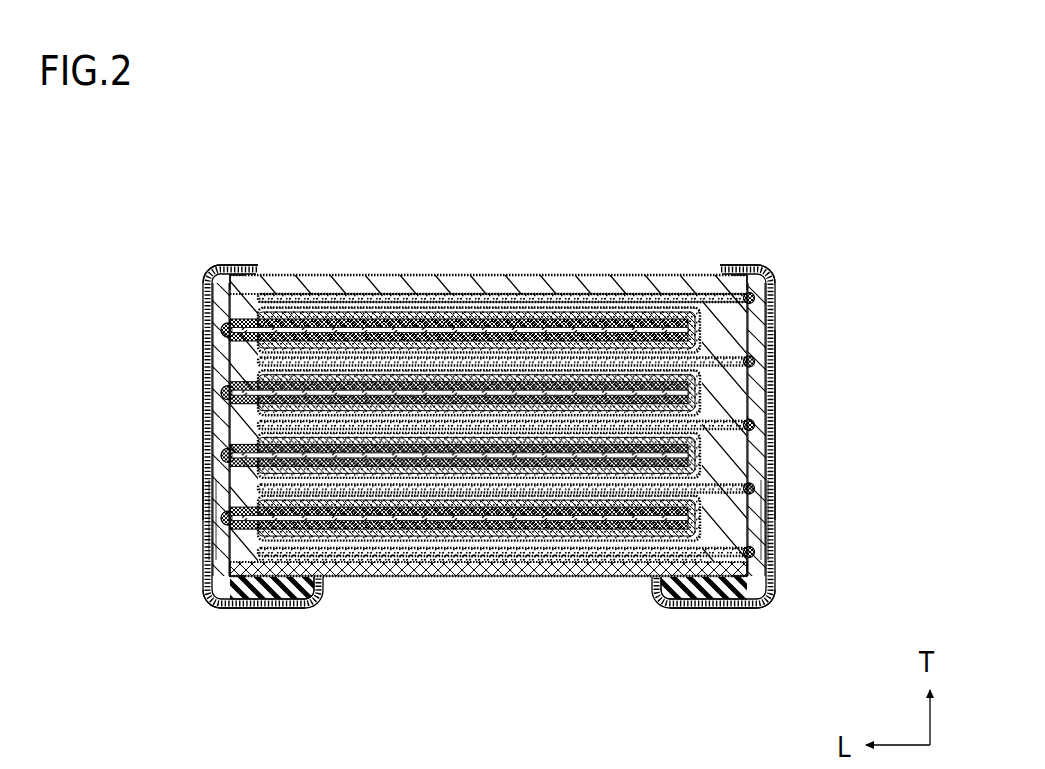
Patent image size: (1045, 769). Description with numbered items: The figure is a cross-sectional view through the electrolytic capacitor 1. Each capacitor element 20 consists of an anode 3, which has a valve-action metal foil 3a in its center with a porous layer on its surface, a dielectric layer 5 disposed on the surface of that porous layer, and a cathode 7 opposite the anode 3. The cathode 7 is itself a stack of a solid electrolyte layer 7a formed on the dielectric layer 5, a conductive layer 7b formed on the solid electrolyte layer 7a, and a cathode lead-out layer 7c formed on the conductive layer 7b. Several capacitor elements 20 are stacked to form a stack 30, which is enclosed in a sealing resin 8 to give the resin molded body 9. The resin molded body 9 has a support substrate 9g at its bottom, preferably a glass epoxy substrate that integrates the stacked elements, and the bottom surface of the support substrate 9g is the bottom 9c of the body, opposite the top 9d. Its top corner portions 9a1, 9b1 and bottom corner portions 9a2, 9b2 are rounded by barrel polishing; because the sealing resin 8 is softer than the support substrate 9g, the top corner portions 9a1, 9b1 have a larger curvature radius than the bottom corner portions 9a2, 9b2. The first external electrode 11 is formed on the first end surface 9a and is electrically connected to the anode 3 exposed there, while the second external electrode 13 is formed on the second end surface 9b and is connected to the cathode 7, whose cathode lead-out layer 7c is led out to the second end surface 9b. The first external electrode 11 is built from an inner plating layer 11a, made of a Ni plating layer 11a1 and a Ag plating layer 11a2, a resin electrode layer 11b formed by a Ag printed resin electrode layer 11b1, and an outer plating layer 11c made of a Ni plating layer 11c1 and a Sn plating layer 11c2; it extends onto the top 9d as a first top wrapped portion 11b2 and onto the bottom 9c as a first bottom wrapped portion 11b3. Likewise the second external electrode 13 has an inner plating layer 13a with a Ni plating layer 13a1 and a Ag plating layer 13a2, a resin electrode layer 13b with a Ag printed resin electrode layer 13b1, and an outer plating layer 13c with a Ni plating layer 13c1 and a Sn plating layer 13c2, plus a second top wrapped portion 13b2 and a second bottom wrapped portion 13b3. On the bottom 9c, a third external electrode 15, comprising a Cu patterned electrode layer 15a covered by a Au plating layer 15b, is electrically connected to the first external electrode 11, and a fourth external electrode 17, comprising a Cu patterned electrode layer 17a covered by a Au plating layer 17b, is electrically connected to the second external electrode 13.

The electrolytic capacitor 1 is at (817, 168).
The anode 3 is at (332, 201).
The valve-action metal foil 3a is at (325, 331).
The dielectric layer 5 is at (377, 324).
The cathode 7 is at (508, 201).
The solid electrolyte layer 7a is at (425, 313).
The conductive layer 7b is at (463, 295).
The cathode lead-out layer 7c is at (503, 298).
The sealing resin 8 is at (548, 290).
The resin molded body 9 is at (673, 272).
The first end surface 9a is at (228, 300).
The top corner portion 9a1 is at (237, 279).
The bottom corner portion 9a2 is at (244, 608).
The second end surface 9b is at (766, 318).
The top corner portion 9b1 is at (735, 272).
The bottom corner portion 9b2 is at (738, 608).
The bottom 9c is at (455, 579).
The top 9d is at (592, 275).
The support substrate 9g is at (530, 577).
The first external electrode 11 is at (190, 264).
The inner plating layer 11a is at (100, 305).
The Ni plating layer 11a1 is at (218, 330).
The Ag plating layer 11a2 is at (213, 375).
The resin electrode layer 11b is at (100, 403).
The Ag printed resin electrode layer 11b1 is at (207, 425).
The first top wrapped portion 11b2 is at (220, 268).
The first bottom wrapped portion 11b3 is at (228, 607).
The outer plating layer 11c is at (100, 480).
The Ni plating layer 11c1 is at (216, 500).
The Sn plating layer 11c2 is at (211, 548).
The second external electrode 13 is at (785, 267).
The inner plating layer 13a is at (876, 330).
The Ni plating layer 13a1 is at (763, 365).
The Ag plating layer 13a2 is at (765, 408).
The resin electrode layer 13b is at (876, 432).
The Ag printed resin electrode layer 13b1 is at (767, 457).
The second top wrapped portion 13b2 is at (756, 266).
The second bottom wrapped portion 13b3 is at (752, 607).
The outer plating layer 13c is at (876, 480).
The Ni plating layer 13c1 is at (764, 505).
The Sn plating layer 13c2 is at (766, 550).
The third external electrode 15 is at (397, 674).
The Cu patterned electrode layer 15a is at (297, 604).
The Au plating layer 15b is at (321, 597).
The fourth external electrode 17 is at (700, 674).
The Cu patterned electrode layer 17a is at (680, 604).
The Au plating layer 17b is at (656, 600).
The capacitor element 20 is at (465, 157).
The stack 30 is at (621, 293).